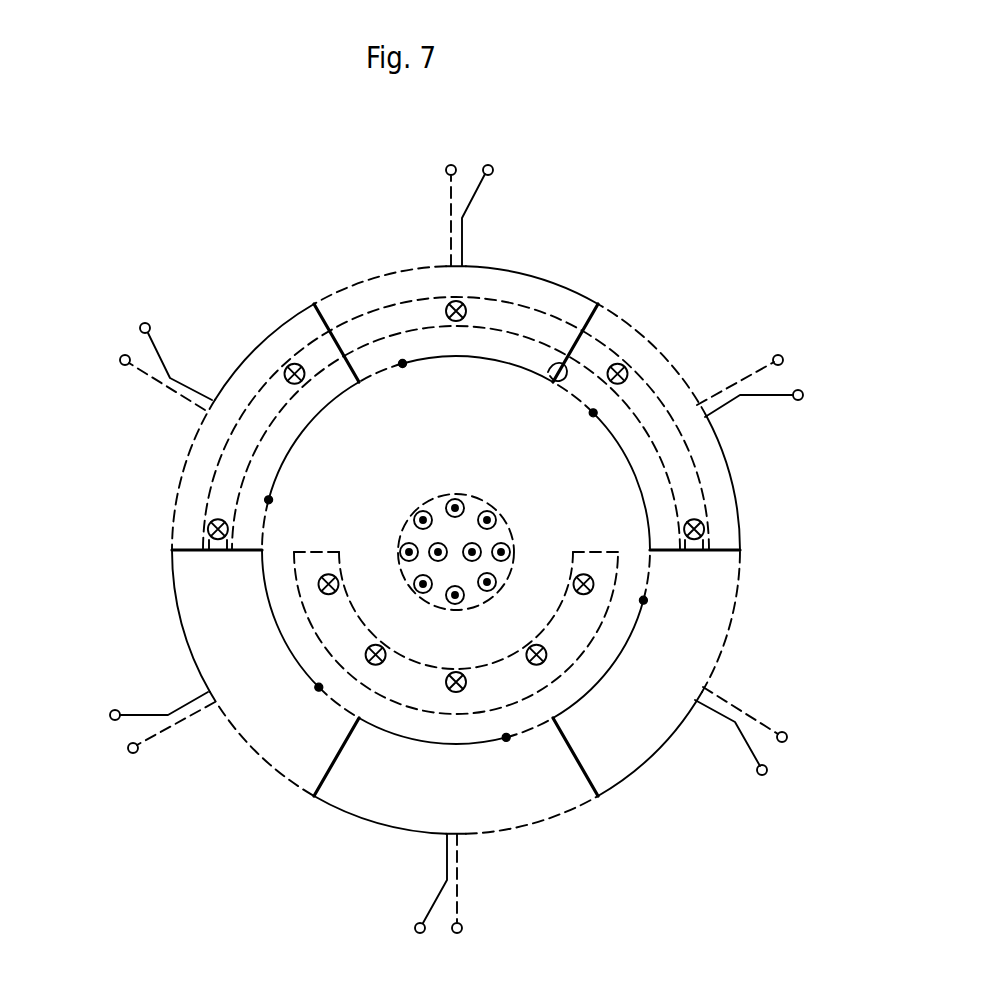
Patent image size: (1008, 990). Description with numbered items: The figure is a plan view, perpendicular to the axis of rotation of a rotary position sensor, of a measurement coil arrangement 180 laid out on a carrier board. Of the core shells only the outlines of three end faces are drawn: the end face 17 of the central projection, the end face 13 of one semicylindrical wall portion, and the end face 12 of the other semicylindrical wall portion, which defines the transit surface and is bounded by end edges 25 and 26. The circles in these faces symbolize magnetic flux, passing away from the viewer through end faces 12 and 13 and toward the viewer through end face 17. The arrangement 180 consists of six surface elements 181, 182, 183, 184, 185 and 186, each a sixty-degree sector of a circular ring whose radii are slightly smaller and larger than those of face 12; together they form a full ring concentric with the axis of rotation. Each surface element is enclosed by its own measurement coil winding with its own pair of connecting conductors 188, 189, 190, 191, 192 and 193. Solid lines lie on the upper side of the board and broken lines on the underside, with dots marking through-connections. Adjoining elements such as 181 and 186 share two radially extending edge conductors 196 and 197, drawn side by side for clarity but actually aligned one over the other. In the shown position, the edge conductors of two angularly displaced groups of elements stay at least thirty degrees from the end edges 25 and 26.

The end face 12 is at (530, 318).
The end face 13 is at (598, 537).
The end face 17 is at (433, 498).
The end edge 25 is at (692, 554).
The end edge 26 is at (213, 554).
The measurement coil arrangement 180 is at (150, 418).
The surface element 181 is at (356, 292).
The surface element 182 is at (185, 520).
The surface element 183 is at (285, 753).
The surface element 184 is at (568, 787).
The surface element 185 is at (712, 620).
The surface element 186 is at (645, 343).
The pair of connecting conductors 188 is at (475, 163).
The pair of connecting conductors 189 is at (133, 343).
The pair of connecting conductors 190 is at (123, 732).
The pair of connecting conductors 191 is at (440, 928).
The pair of connecting conductors 192 is at (775, 755).
The pair of connecting conductors 193 is at (790, 373).
The edge conductor 196 is at (548, 372).
The edge conductor 197 is at (560, 396).